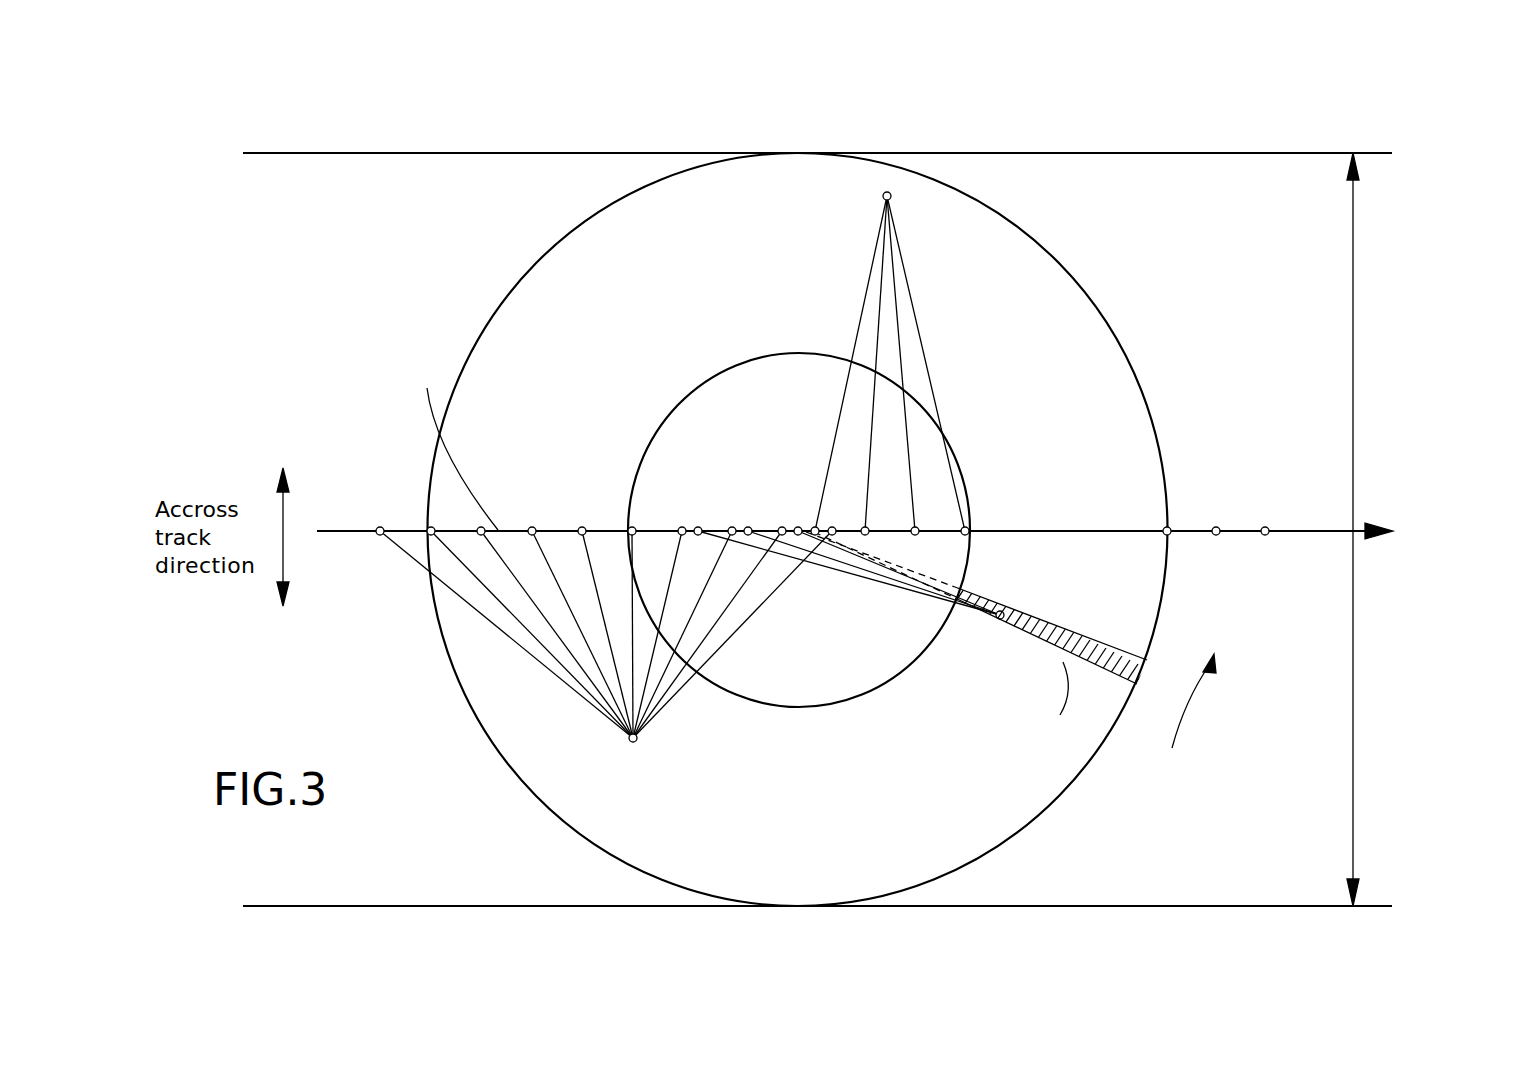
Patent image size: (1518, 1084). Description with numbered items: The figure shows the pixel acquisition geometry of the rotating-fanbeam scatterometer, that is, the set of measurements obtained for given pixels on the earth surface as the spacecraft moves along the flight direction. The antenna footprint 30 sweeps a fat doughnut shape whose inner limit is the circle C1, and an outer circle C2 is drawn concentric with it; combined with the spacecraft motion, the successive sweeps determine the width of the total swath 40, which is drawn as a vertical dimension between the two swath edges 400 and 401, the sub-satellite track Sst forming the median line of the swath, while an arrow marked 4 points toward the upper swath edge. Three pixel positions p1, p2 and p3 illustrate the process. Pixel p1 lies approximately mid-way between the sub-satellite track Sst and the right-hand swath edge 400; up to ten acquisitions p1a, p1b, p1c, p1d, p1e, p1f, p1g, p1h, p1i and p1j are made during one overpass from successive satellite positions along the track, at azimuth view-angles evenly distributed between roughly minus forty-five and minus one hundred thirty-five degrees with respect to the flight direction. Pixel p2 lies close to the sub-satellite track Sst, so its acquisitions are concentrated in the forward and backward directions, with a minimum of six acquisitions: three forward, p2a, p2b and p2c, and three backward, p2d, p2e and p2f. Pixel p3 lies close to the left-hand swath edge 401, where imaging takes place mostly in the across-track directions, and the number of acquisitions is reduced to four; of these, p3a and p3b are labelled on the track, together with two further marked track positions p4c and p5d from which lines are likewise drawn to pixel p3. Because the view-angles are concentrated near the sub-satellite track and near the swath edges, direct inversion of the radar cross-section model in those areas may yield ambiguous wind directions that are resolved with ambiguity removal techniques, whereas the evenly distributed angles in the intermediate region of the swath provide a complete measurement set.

The satellite swath region 4 is at (1195, 142).
The antenna footprint 30 is at (1105, 658).
The total swath 40 is at (1356, 346).
The swath edge 400 is at (1202, 906).
The swath edge 401 is at (1042, 152).
The inner limit circle of the antenna footprint C1 is at (892, 686).
The outer circle C2 is at (1126, 346).
The sub-satellite track Sst is at (350, 530).
The pixel position p1 is at (628, 740).
The pixel position p2 is at (1001, 621).
The pixel position p3 is at (892, 196).
The acquisition p1a is at (378, 535).
The acquisition p1b is at (430, 527).
The acquisition p1c is at (481, 527).
The acquisition p1d is at (532, 527).
The acquisition p1e is at (582, 527).
The acquisition p1f is at (632, 527).
The acquisition p1g is at (682, 527).
The acquisition p1h is at (732, 527).
The acquisition p1i is at (782, 527).
The acquisition p1j is at (832, 527).
The forward acquisition p2a is at (698, 527).
The forward acquisition p2b is at (748, 527).
The forward acquisition p2c is at (798, 527).
The backward acquisition p2d is at (1166, 527).
The backward acquisition p2e is at (1215, 527).
The backward acquisition p2f is at (1265, 527).
The acquisition p3a is at (815, 527).
The acquisition p3b is at (866, 527).
The satellite position on track p4c is at (915, 535).
The satellite position on track p5d is at (968, 528).